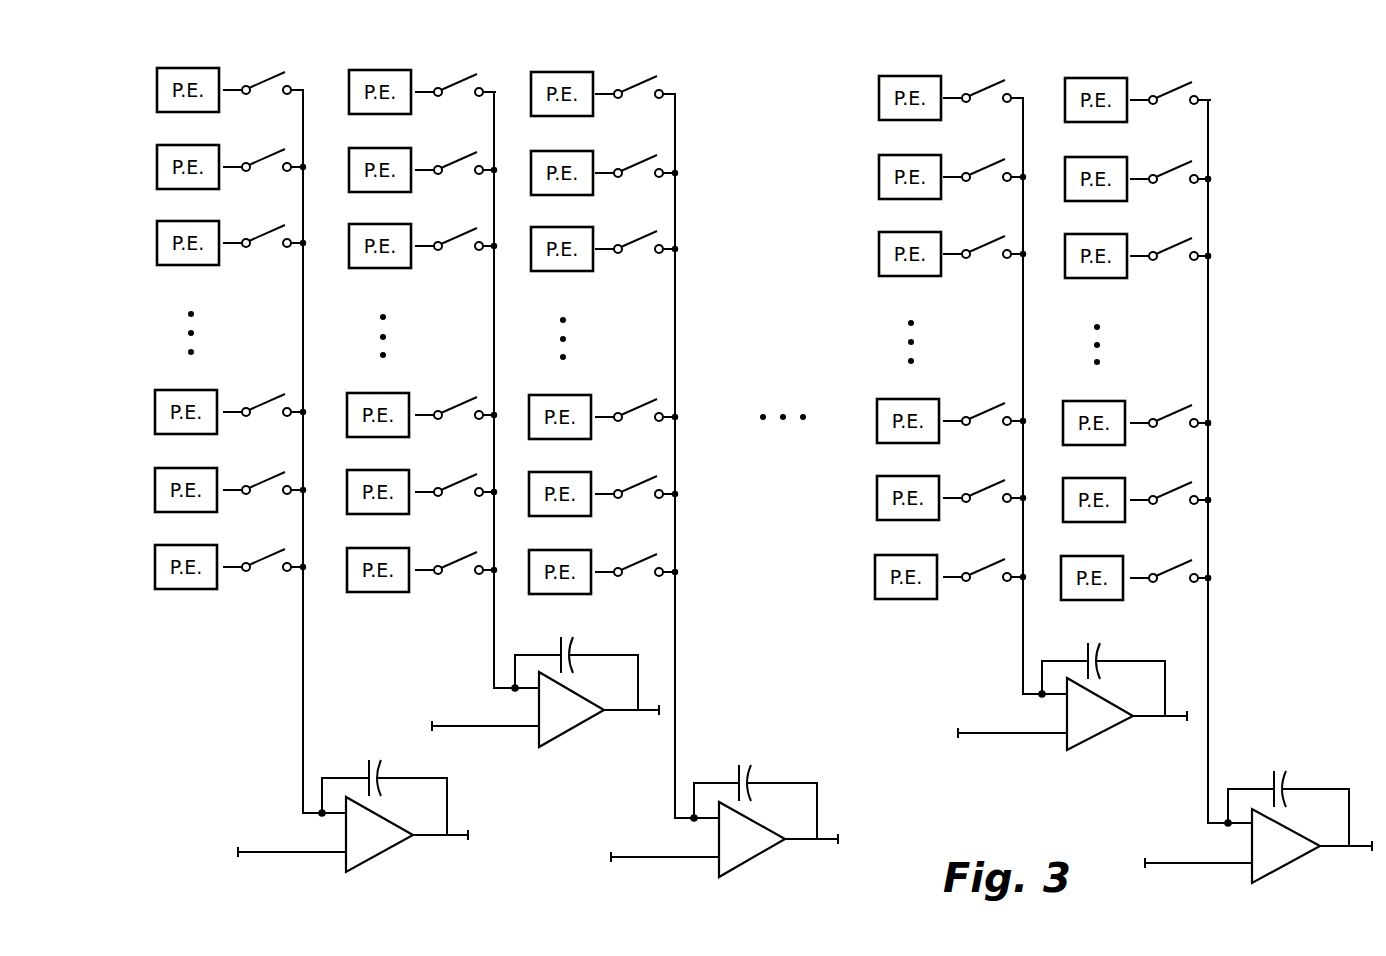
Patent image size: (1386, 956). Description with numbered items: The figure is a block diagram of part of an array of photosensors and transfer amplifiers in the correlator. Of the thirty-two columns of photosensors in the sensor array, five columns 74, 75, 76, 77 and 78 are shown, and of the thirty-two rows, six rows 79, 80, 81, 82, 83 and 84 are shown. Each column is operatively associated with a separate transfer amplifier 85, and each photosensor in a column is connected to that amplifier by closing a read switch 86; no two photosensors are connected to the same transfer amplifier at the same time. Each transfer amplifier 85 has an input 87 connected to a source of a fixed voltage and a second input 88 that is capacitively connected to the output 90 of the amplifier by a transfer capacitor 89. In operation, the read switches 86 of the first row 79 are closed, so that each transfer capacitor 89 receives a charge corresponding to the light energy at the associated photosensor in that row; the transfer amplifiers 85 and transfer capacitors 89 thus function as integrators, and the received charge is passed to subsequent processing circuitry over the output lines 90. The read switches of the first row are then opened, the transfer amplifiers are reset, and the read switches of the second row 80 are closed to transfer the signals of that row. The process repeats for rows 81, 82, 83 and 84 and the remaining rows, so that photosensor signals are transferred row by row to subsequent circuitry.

The column 74 is at (205, 605).
The column 75 is at (383, 610).
The column 76 is at (547, 606).
The column 77 is at (892, 612).
The column 78 is at (1120, 613).
The first row 79 is at (1234, 93).
The second row 80 is at (1234, 169).
The row 81 is at (1234, 255).
The row 82 is at (1236, 407).
The row 83 is at (1228, 495).
The row 84 is at (1228, 580).
The transfer amplifier 85 is at (387, 832).
The read switch 86 is at (266, 78).
The input 87 is at (262, 852).
The second input 88 is at (306, 812).
The transfer capacitor 89 is at (372, 760).
The output 90 is at (458, 835).